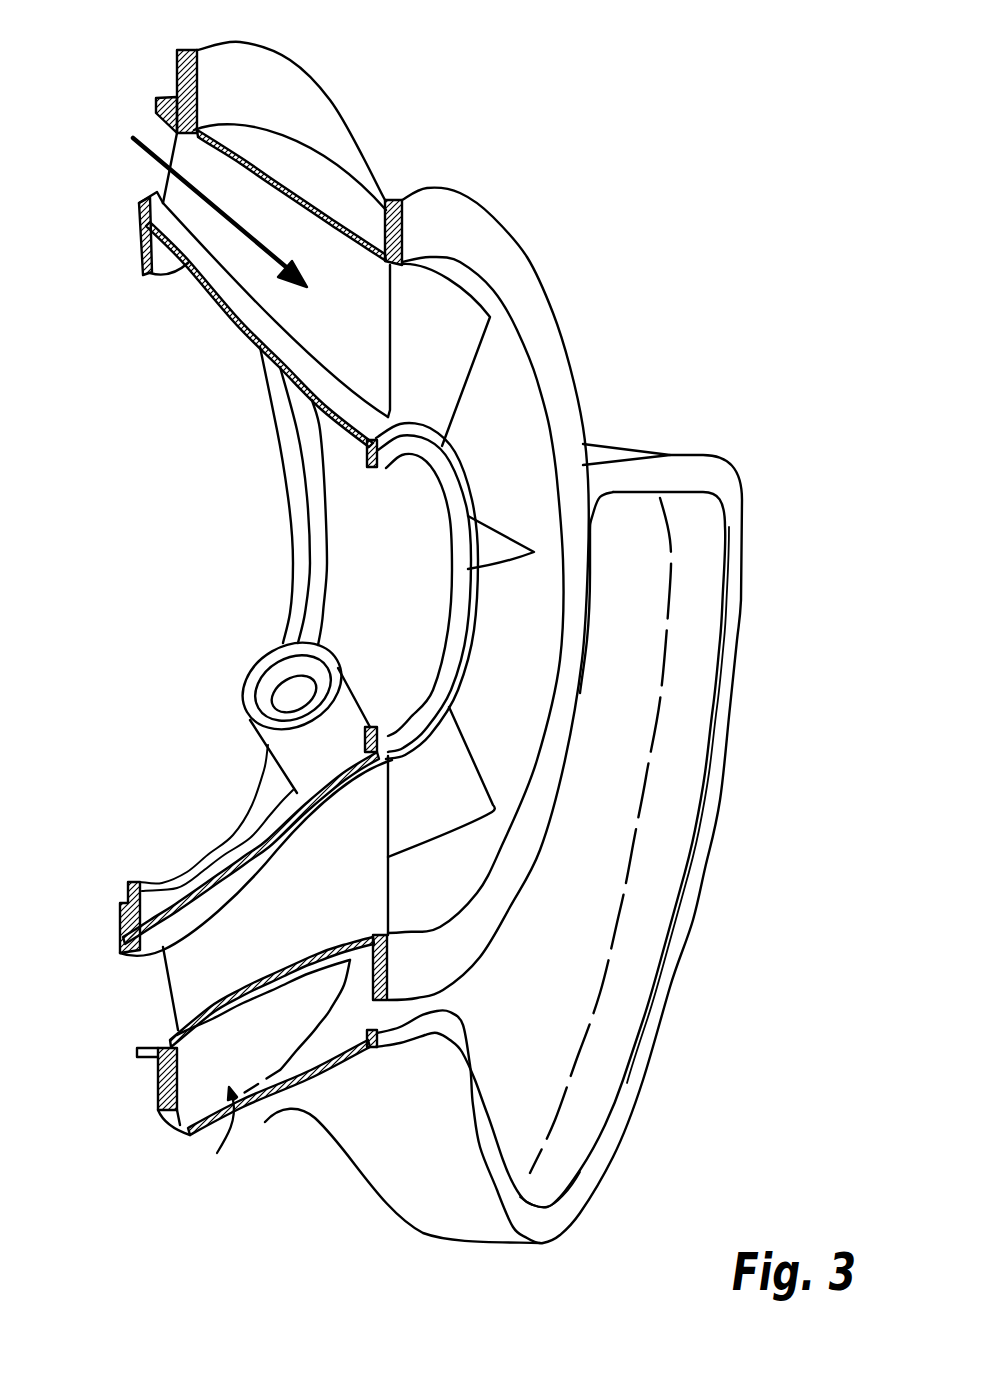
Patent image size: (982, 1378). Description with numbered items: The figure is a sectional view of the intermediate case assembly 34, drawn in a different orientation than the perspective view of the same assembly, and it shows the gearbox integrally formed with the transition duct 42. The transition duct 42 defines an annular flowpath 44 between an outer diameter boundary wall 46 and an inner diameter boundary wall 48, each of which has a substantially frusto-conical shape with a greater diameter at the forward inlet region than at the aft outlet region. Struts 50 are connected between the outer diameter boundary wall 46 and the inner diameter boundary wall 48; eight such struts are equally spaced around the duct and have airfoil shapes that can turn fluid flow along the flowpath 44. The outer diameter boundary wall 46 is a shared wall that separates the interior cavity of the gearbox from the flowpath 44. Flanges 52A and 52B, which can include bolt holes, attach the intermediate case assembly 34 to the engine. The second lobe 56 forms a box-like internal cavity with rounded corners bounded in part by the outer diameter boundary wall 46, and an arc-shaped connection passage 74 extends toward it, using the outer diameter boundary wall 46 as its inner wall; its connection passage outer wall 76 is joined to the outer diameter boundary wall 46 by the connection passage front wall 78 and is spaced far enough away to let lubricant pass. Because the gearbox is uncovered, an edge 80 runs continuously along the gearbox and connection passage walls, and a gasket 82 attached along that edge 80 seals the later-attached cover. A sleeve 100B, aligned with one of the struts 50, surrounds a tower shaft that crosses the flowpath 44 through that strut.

The intermediate case assembly 34 is at (620, 122).
The transition duct 42 is at (293, 163).
The annular flowpath 44 is at (143, 137).
The outer diameter boundary wall 46 is at (343, 212).
The inner diameter boundary wall 48 is at (238, 318).
The struts 50 is at (337, 328).
The flange 52A is at (250, 77).
The flange 52B is at (510, 270).
The second lobe 56 is at (362, 1198).
The connection passage 74 is at (210, 1136).
The connection passage outer wall 76 is at (293, 1074).
The connection passage front wall 78 is at (157, 1087).
The edge 80 is at (493, 1210).
The gasket 82 is at (542, 1222).
The sleeve 100B is at (270, 680).